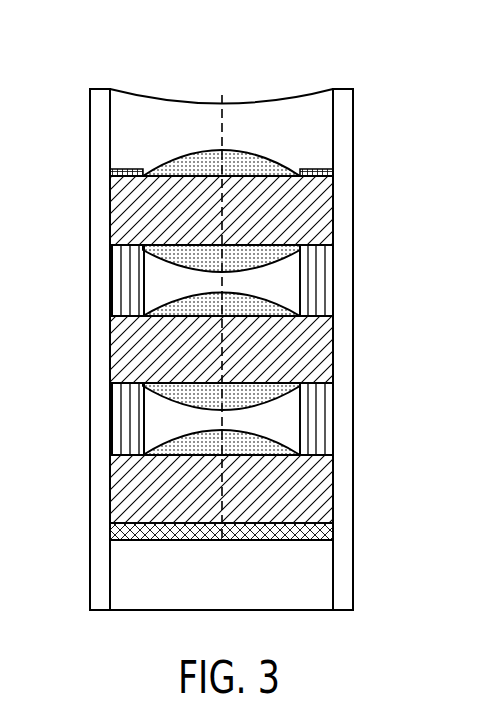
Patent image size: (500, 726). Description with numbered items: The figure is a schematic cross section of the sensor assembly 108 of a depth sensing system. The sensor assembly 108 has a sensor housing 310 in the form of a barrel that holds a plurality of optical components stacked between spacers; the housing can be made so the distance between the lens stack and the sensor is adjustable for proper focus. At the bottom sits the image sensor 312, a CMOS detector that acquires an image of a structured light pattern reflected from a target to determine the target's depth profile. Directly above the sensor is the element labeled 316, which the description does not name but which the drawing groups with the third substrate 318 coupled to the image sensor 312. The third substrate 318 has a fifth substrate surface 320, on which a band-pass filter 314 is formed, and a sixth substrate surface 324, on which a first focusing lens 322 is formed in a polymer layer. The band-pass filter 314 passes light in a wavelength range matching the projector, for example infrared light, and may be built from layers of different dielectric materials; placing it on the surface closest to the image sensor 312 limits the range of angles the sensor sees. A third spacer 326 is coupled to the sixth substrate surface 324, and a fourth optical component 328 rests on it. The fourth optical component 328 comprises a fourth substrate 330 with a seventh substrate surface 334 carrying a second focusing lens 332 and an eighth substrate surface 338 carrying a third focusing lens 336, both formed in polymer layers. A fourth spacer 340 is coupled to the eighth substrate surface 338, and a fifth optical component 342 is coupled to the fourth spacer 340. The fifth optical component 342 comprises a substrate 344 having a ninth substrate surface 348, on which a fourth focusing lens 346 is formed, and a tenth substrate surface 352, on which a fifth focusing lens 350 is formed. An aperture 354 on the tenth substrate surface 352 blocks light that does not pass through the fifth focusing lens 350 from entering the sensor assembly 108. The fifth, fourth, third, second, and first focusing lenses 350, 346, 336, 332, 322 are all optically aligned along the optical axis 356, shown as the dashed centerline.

The sensor assembly 108 is at (344, 66).
The sensor housing 310 is at (353, 99).
The image sensor 312 is at (207, 598).
The band-pass filter 314 is at (335, 531).
The first lens wafer stack 316 is at (217, 485).
The third substrate 318 is at (256, 499).
The fifth substrate surface 320 is at (112, 528).
The first focusing lens 322 is at (300, 442).
The sixth substrate surface 324 is at (112, 450).
The third spacer 326 is at (335, 417).
The fourth optical component 328 is at (218, 349).
The fourth substrate 330 is at (256, 359).
The second focusing lens 332 is at (300, 403).
The seventh substrate surface 334 is at (112, 389).
The third focusing lens 336 is at (300, 296).
The eighth substrate surface 338 is at (112, 310).
The fourth spacer 340 is at (335, 270).
The fifth optical component 342 is at (220, 196).
The substrate 344 is at (256, 220).
The fourth focusing lens 346 is at (300, 263).
The ninth substrate surface 348 is at (112, 249).
The fifth focusing lens 350 is at (289, 157).
The tenth substrate surface 352 is at (110, 171).
The aperture 354 is at (335, 168).
The optical axis 356 is at (223, 93).